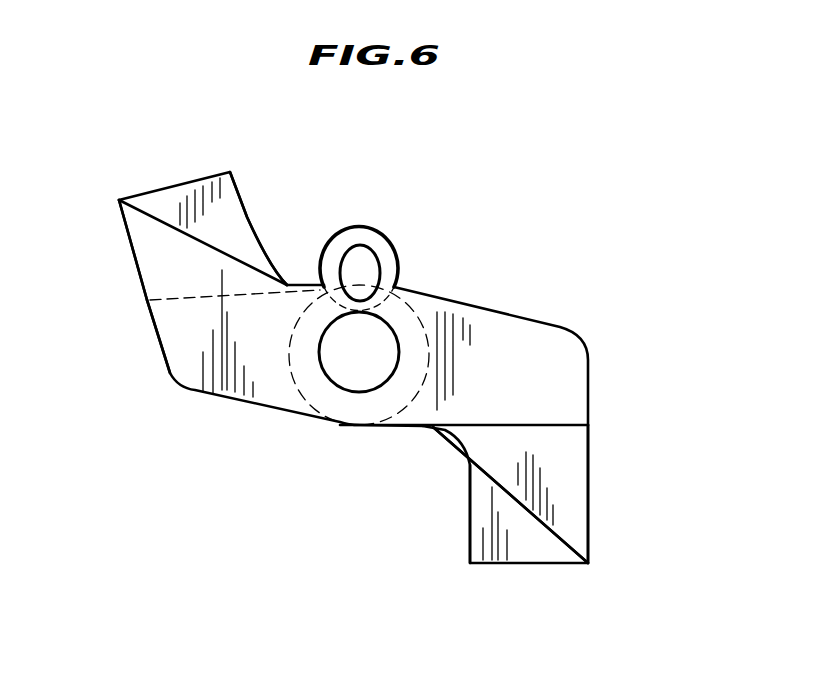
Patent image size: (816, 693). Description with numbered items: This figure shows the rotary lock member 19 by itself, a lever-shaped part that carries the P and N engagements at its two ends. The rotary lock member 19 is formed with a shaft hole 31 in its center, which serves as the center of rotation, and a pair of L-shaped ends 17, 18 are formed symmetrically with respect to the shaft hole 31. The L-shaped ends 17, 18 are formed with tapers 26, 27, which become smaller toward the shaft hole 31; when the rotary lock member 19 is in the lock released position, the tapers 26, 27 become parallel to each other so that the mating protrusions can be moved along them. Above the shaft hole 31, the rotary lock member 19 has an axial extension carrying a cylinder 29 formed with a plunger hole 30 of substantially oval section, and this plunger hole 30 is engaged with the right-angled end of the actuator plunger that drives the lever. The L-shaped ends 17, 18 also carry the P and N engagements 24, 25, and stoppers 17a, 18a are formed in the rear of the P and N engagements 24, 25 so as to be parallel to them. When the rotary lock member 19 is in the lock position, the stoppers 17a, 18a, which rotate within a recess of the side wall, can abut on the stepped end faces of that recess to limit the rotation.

The L-shaped end 17 is at (221, 197).
The stopper 17a is at (250, 215).
The L-shaped end 18 is at (570, 465).
The stopper 18a is at (468, 510).
The rotary lock member 19 is at (537, 247).
The P engagement 24 is at (134, 275).
The N engagement 25 is at (588, 515).
The taper 26 is at (156, 218).
The taper 27 is at (530, 513).
The cylinder 29 is at (390, 238).
The plunger hole 30 is at (370, 265).
The shaft hole 31 is at (340, 370).